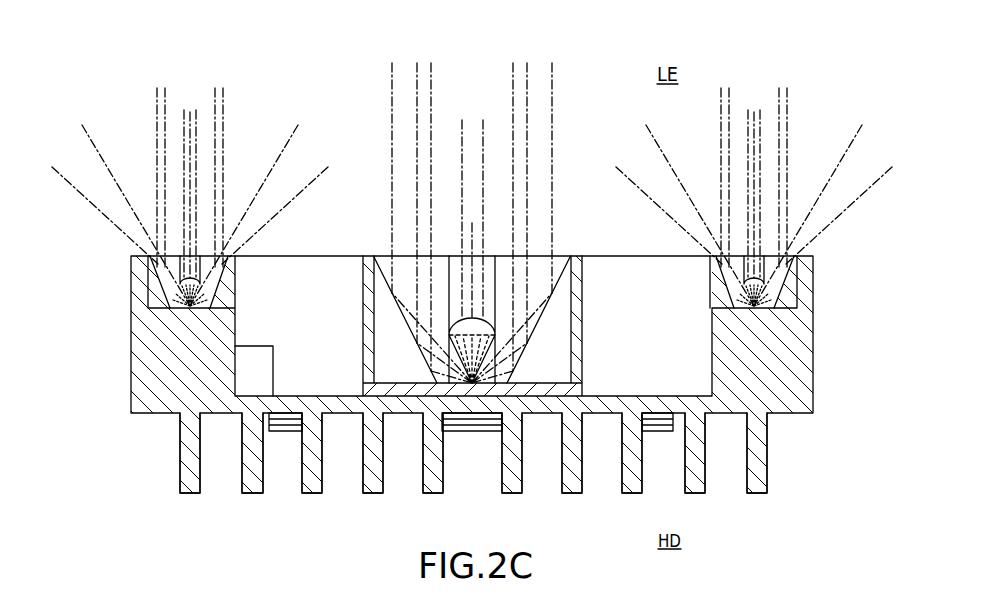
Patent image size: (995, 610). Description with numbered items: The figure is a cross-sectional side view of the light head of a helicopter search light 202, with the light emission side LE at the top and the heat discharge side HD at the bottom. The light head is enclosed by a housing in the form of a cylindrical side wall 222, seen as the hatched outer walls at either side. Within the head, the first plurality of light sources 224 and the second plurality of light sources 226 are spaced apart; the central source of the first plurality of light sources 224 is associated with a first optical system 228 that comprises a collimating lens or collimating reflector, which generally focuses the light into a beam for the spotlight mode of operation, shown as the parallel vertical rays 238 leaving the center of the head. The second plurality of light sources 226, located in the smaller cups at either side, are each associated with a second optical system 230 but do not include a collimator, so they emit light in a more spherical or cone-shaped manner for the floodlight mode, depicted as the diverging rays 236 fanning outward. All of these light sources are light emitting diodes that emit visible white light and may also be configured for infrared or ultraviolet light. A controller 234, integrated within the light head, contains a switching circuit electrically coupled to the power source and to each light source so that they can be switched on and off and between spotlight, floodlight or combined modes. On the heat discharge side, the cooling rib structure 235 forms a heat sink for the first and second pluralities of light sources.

The helicopter search light 202 is at (63, 106).
The cylindrical side wall 222 is at (813, 258).
The first plurality of light sources 224 is at (428, 366).
The second plurality of light sources 226 is at (158, 289).
The first optical system 228 is at (430, 375).
The second optical system 230 is at (223, 264).
The controller 234 is at (248, 372).
The cooling rib structure 235 is at (768, 452).
The collimated light beam 236 is at (252, 112).
The central light beam 238 is at (485, 70).